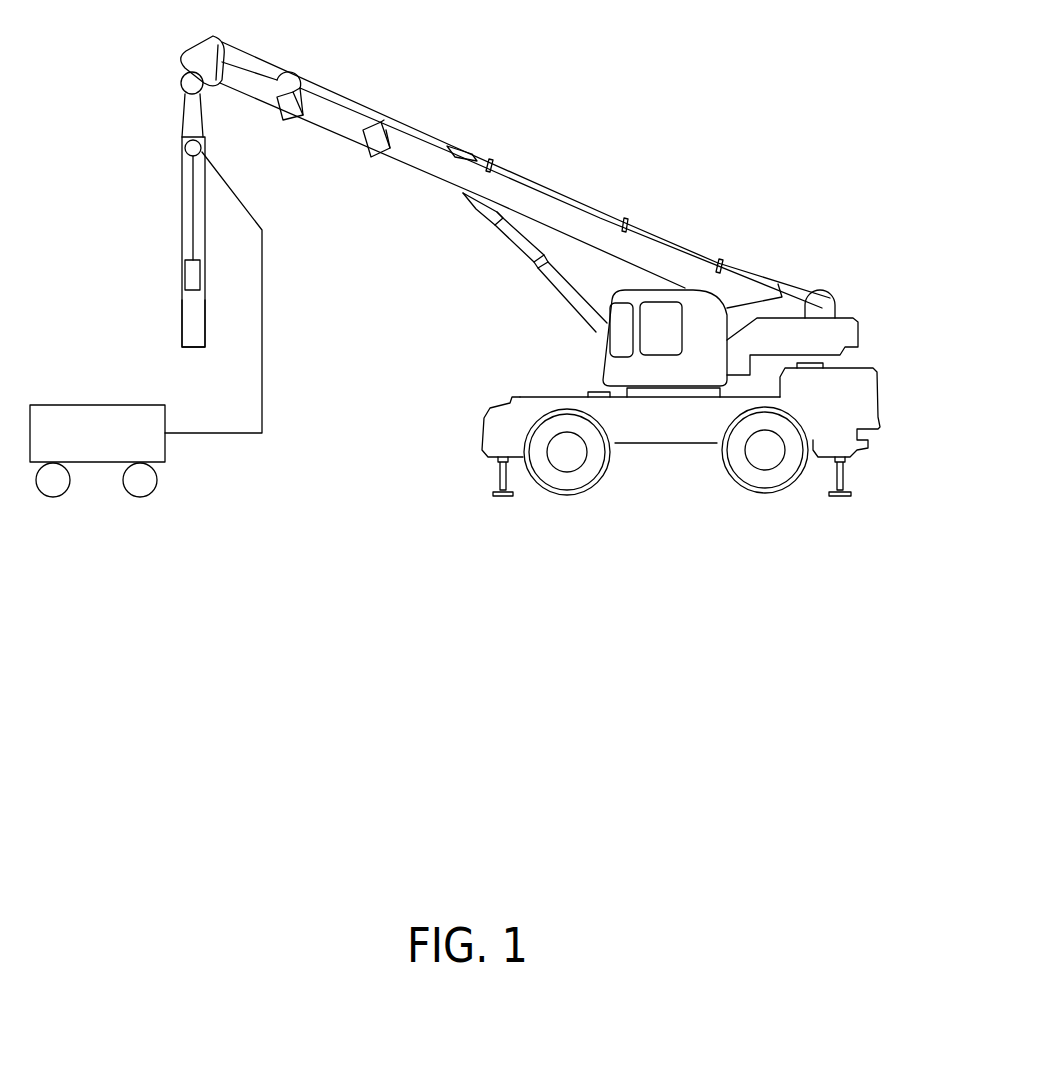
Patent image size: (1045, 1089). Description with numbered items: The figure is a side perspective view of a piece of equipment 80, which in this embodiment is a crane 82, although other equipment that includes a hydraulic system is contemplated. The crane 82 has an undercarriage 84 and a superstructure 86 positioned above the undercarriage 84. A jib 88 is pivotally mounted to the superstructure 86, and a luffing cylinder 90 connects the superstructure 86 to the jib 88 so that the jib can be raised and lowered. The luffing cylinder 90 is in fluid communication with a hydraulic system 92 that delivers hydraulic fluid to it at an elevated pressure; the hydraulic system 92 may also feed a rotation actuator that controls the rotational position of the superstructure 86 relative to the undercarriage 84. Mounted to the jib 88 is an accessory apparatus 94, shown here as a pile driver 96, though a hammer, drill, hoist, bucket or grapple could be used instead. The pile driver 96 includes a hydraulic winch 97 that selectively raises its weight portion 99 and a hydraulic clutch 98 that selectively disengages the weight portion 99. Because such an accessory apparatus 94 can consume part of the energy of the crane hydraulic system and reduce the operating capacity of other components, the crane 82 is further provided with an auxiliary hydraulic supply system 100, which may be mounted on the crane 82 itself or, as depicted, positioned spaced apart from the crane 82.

The piece of equipment 80 is at (786, 72).
The crane 82 is at (879, 348).
The undercarriage 84 is at (880, 410).
The superstructure 86 is at (732, 312).
The jib 88 is at (543, 190).
The luffing cylinder 90 is at (578, 295).
The hydraulic system 92 is at (685, 335).
The accessory apparatus 94 is at (177, 242).
The pile driver 96 is at (180, 308).
The hydraulic winch 97 is at (183, 142).
The hydraulic clutch 98 is at (187, 155).
The weight portion 99 is at (201, 276).
The auxiliary hydraulic supply system 100 is at (180, 450).